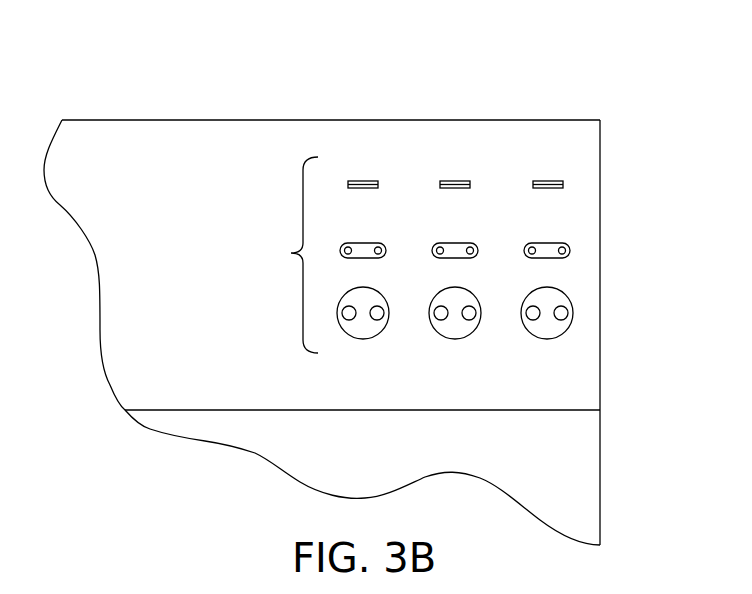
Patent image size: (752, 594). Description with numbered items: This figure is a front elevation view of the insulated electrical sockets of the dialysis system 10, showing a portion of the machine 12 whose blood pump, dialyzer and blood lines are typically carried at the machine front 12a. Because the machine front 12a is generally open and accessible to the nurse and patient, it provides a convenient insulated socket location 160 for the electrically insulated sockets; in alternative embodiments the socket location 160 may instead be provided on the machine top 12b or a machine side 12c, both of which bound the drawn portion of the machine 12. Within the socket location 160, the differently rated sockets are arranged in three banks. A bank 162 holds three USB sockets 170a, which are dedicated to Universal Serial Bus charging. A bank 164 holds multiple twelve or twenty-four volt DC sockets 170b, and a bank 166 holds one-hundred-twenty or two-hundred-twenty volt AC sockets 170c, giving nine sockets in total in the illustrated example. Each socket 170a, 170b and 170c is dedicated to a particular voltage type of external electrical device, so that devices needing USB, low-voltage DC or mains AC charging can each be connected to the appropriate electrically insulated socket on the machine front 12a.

The vehicle 10 is at (146, 68).
The machine 12 is at (598, 107).
The machine front 12a is at (186, 270).
The machine top 12b is at (312, 120).
The machine side 12c is at (600, 160).
The insulated socket location 160 is at (283, 255).
The bank of USB sockets 162 is at (565, 184).
The bank of 12 VDC or 24 VDC sockets 164 is at (571, 250).
The bank of 120 VAC or 220 VAC sockets 166 is at (573, 313).
The USB socket 170a is at (355, 180).
The 12 VDC or 24 VDC socket 170b is at (361, 242).
The 120 VAC or 220 VAC socket 170c is at (363, 339).